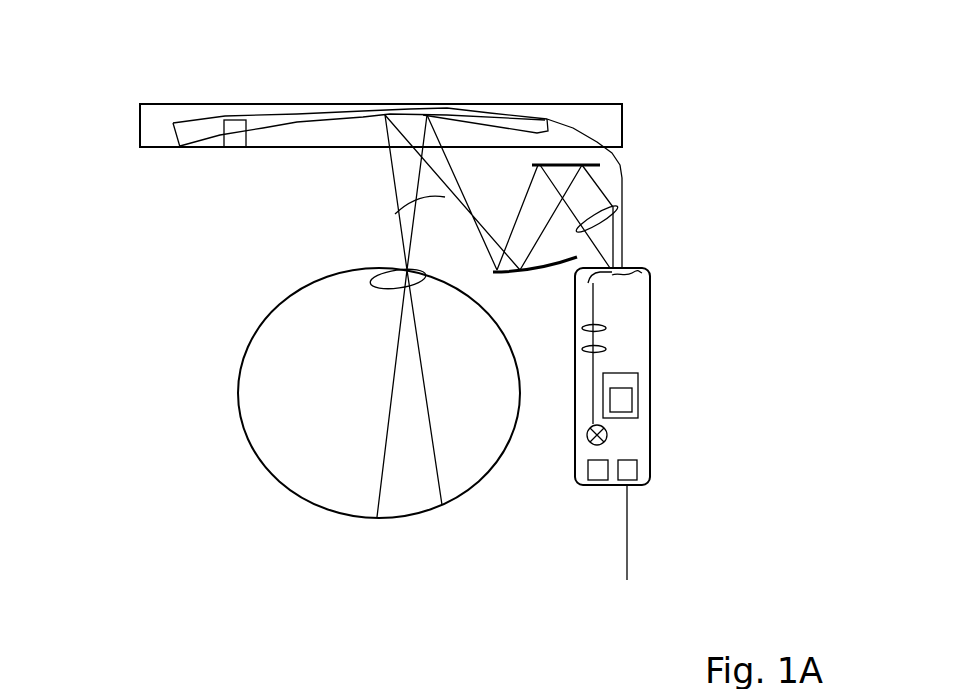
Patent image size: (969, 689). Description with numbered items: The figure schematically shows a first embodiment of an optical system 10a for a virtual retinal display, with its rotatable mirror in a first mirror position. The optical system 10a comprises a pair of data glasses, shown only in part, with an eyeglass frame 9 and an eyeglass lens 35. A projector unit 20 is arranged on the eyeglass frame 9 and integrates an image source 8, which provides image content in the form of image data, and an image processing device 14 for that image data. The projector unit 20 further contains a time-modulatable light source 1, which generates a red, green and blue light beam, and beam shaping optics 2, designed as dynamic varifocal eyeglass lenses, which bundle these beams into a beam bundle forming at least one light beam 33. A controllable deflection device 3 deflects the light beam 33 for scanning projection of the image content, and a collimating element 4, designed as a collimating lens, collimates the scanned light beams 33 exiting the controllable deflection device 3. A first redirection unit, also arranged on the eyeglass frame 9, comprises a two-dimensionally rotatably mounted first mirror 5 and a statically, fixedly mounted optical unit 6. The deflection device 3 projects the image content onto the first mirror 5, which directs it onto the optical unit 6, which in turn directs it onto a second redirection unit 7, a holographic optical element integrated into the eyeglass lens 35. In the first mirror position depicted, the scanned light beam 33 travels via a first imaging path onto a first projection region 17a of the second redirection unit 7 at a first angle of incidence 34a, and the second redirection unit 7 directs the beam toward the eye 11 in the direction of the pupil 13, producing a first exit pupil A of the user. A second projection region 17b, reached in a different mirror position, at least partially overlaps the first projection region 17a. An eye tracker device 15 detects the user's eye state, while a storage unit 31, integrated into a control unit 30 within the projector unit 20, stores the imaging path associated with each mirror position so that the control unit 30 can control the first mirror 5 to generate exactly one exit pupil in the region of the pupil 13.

The time-modulatable light source 1 is at (608, 434).
The beam shaping optics 2 is at (608, 349).
The controllable deflection device 3 is at (645, 268).
The collimating element 4 is at (620, 208).
The first mirror 5 is at (602, 166).
The statically mounted optical unit 6 is at (545, 268).
The second redirection unit 7 is at (623, 123).
The image source 8 is at (600, 481).
The eyeglass frame 9 is at (629, 516).
The optical system 10a is at (748, 220).
The eye 11 is at (258, 391).
The pupil 13 is at (382, 268).
The image processing device 14 is at (638, 470).
The eye tracker device 15 is at (240, 130).
The first projection region 17a is at (527, 88).
The second projection region 17b is at (428, 682).
The projector unit 20 is at (651, 297).
The control unit 30 is at (639, 412).
The storage unit 31 is at (633, 397).
The light beam 33 is at (608, 328).
The first angle of incidence 34a is at (436, 210).
The eyeglass lens 35 is at (138, 125).
The first exit pupil A is at (397, 271).